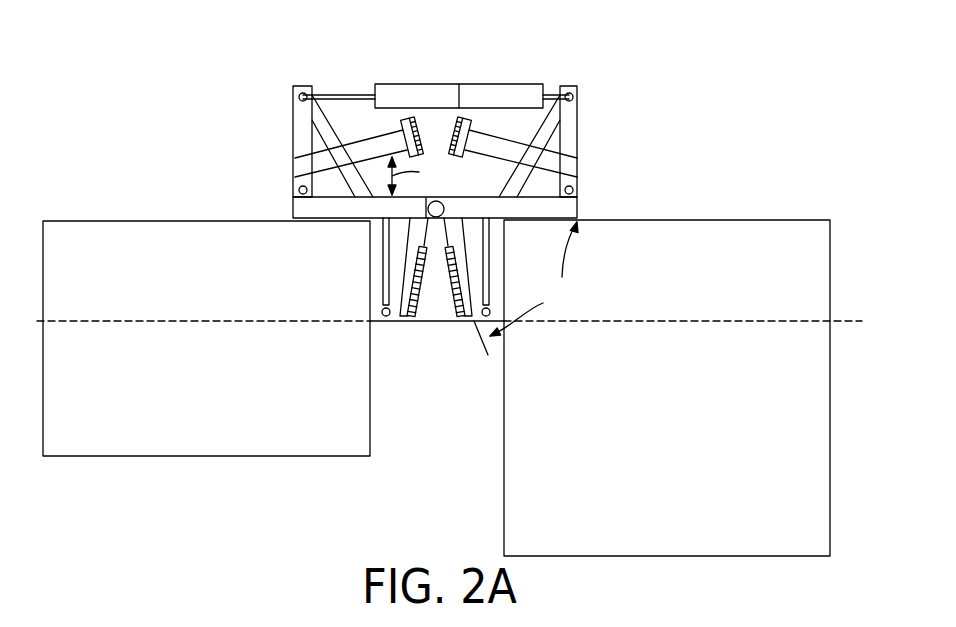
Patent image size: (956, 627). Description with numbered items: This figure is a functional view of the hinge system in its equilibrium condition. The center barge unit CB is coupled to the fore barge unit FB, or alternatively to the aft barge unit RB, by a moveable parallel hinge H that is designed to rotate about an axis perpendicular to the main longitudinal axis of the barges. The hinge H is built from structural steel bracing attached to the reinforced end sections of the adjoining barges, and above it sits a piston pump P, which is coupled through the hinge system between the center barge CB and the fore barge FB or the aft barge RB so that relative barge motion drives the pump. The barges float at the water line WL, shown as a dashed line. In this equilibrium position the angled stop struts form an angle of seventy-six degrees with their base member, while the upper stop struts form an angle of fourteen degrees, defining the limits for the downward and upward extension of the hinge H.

The wave tower / tower frame WT is at (292, 108).
The piston pump P is at (483, 80).
The water line WL is at (782, 318).
The hinge H is at (436, 310).
The fore barge unit FB is at (206, 338).
The aft barge unit RB is at (206, 338).
The center barge unit CB is at (667, 388).